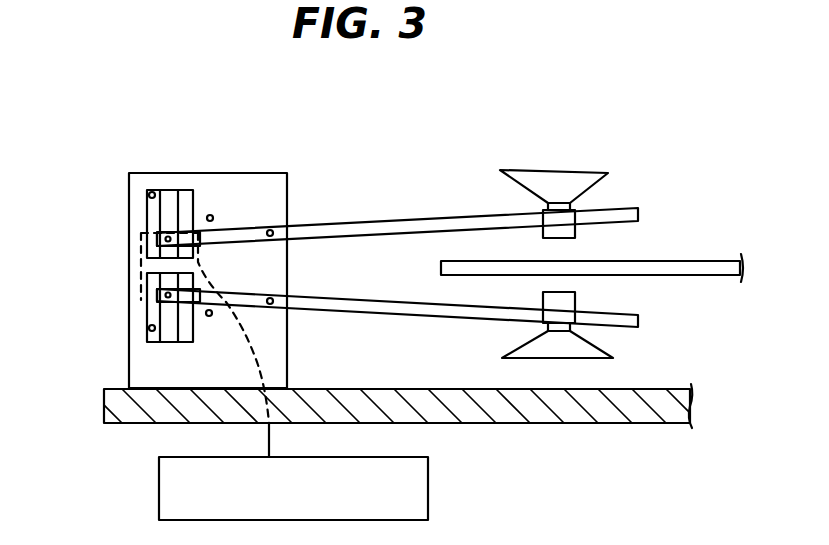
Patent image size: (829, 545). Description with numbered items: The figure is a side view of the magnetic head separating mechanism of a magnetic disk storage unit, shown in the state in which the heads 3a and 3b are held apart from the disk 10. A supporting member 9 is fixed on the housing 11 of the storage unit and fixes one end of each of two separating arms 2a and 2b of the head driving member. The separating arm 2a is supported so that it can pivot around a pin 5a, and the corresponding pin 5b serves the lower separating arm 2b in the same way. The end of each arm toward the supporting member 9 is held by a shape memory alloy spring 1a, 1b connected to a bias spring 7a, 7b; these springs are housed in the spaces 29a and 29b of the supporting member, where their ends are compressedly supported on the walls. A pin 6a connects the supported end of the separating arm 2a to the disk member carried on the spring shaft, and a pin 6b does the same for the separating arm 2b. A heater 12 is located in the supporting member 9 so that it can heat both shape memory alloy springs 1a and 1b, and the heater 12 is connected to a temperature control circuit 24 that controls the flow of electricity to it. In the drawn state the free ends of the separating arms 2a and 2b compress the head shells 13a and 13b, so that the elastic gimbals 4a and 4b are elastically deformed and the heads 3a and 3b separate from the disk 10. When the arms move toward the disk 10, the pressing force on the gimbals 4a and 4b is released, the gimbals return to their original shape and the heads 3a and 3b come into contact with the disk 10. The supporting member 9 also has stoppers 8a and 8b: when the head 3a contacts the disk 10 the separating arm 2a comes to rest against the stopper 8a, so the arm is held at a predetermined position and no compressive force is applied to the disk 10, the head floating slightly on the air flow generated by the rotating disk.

The shape memory alloy spring 1a is at (162, 242).
The shape memory alloy spring 1b is at (162, 293).
The separating arm 2a is at (428, 220).
The separating arm 2b is at (410, 317).
The head 3a is at (577, 230).
The head 3b is at (577, 300).
The elastic gimbal 4a is at (566, 171).
The elastic gimbal 4b is at (590, 358).
The pin 5a is at (273, 230).
The lower pivot hole 5b is at (272, 305).
The pin 6a is at (156, 228).
The lower clamp 6b is at (152, 318).
The bias spring 7a is at (168, 190).
The bias spring 7b is at (170, 341).
The stopper 8a is at (210, 214).
The lower hole 8b is at (210, 317).
The supporting member 9 is at (258, 190).
The disk 10 is at (705, 260).
The housing 11 is at (645, 424).
The heater 12 is at (138, 298).
The head shell 13a is at (575, 205).
The head shell 13b is at (575, 327).
The temperature control circuit 24 is at (428, 492).
The space 29a is at (149, 192).
The lower screw 29b is at (148, 336).